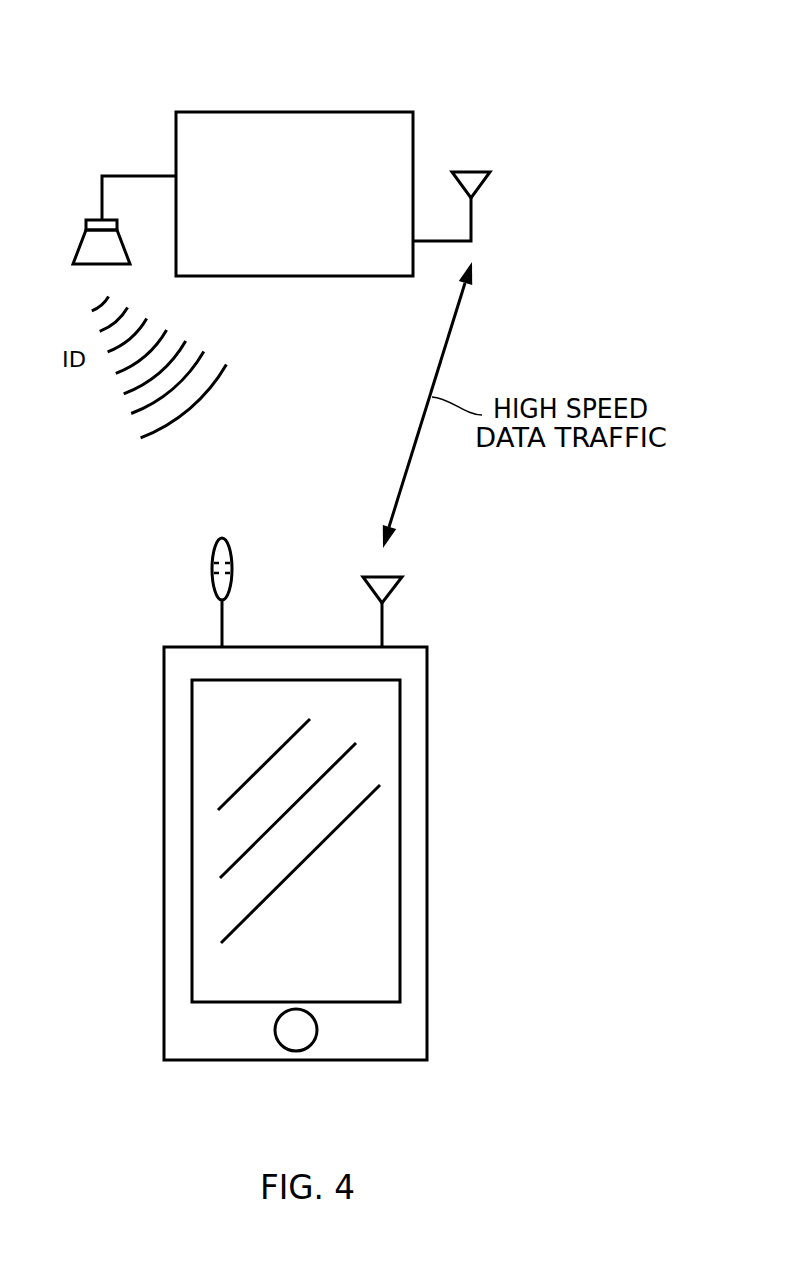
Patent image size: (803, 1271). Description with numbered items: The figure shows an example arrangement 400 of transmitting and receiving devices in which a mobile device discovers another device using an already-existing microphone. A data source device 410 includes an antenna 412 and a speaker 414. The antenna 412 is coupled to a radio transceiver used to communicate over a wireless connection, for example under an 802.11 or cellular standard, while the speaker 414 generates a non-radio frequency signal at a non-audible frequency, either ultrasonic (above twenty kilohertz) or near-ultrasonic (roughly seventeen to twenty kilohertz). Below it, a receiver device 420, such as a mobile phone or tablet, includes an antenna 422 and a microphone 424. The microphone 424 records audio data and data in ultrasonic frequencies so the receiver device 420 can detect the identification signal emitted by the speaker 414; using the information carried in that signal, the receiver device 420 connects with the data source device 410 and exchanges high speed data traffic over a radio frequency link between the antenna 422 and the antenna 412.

The system 400 is at (667, 35).
The data source device 410 is at (322, 112).
The antenna 412 is at (468, 171).
The speaker 414 is at (78, 247).
The receiver device 420 is at (415, 647).
The antenna 422 is at (395, 577).
The microphone 424 is at (228, 540).